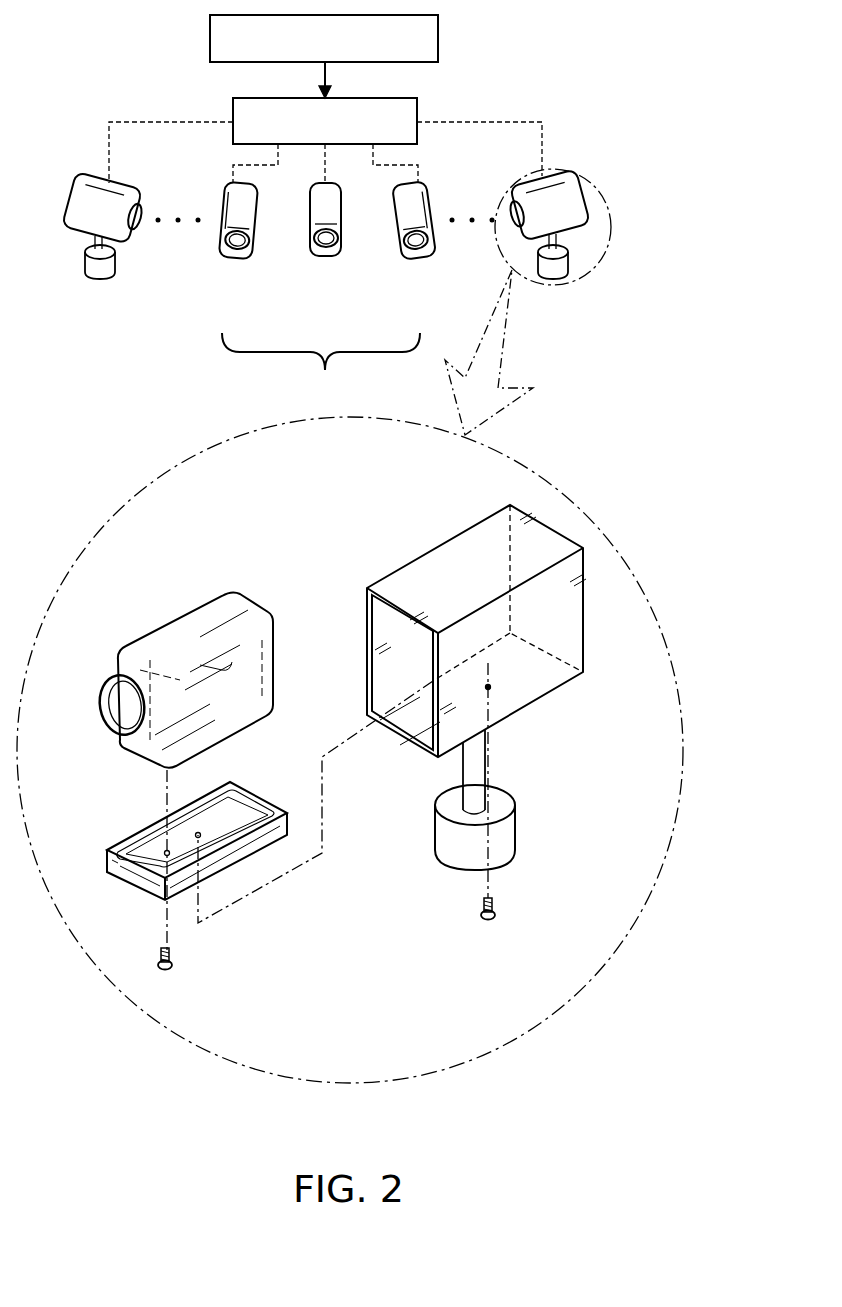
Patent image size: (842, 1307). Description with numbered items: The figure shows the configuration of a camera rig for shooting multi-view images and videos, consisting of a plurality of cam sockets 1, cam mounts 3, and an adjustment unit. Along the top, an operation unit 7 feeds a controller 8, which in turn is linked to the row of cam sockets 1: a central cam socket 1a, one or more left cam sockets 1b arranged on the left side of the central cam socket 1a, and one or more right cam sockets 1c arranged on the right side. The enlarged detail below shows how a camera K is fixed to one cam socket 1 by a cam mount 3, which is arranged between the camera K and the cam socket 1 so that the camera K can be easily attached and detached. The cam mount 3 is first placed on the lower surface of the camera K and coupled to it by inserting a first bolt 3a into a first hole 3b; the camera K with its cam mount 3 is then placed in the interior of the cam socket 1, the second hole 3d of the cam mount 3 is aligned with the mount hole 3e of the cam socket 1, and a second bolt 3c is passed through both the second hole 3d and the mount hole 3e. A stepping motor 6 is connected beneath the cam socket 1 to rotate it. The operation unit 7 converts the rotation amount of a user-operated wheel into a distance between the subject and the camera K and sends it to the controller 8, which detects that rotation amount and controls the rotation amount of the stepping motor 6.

The operation unit 7 is at (438, 38).
The controller 8 is at (417, 108).
The cam socket 1 is at (583, 610).
The central cam socket 1a is at (326, 258).
The left cam socket 1b is at (238, 260).
The right cam socket 1c is at (410, 260).
The camera K is at (202, 624).
The cam mount 3 is at (108, 862).
The first bolt 3a is at (168, 970).
The first hole 3b is at (167, 853).
The second bolt 3c is at (495, 914).
The second hole 3d is at (200, 836).
The mount hole 3e is at (491, 688).
The stepping motor 6 is at (515, 826).